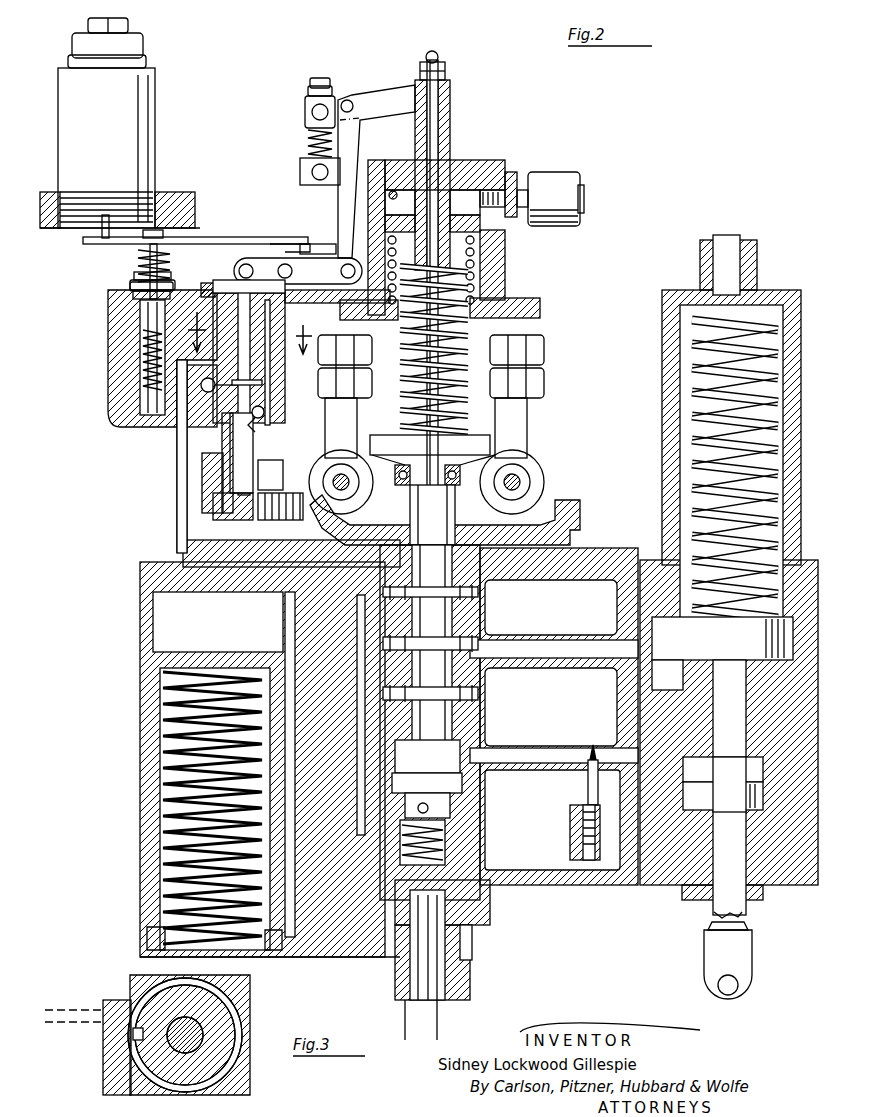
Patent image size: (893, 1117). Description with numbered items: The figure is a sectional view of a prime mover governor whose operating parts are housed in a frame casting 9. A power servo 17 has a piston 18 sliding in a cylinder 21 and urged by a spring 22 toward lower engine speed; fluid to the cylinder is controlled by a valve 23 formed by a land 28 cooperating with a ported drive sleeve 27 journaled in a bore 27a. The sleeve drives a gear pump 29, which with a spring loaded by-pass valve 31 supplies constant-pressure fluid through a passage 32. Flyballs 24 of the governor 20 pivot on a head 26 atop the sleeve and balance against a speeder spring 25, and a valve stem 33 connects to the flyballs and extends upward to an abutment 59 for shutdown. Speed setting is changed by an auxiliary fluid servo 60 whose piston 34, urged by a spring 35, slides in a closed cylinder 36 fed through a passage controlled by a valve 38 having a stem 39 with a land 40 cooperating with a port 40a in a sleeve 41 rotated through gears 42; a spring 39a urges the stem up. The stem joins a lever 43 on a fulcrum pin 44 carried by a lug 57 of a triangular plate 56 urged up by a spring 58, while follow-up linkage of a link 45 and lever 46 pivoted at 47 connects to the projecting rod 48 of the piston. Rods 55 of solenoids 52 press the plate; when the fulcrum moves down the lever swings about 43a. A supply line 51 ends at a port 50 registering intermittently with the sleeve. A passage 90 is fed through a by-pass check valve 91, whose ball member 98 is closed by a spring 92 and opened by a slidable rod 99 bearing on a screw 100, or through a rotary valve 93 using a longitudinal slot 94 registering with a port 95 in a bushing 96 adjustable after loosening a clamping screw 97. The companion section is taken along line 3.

In FIG. 2, the solenoid 52 is at (150, 135).
In FIG. 2, the rod 55 is at (102, 234).
In FIG. 2, the plate 56 is at (90, 245).
In FIG. 2, the spring 58 is at (140, 266).
In FIG. 2, the screw 100 is at (170, 262).
In FIG. 2, the clamping screw 97 is at (208, 290).
In FIG. 2, the fulcrum pin 44 is at (292, 272).
In FIG. 2, the lug 57 is at (258, 266).
In FIG. 2, the pivot 43a is at (344, 281).
In FIG. 2, the lever 43 is at (322, 270).
In FIG. 2, the lever 46 is at (385, 105).
In FIG. 2, the link 45 is at (340, 192).
In FIG. 2, the pivot 47 is at (307, 114).
In FIG. 2, the projecting rod 48 is at (450, 135).
In FIG. 2, the abutment 59 is at (448, 72).
In FIG. 2, the cylinder 36 is at (476, 237).
In FIG. 2, the piston 34 is at (498, 246).
In FIG. 2, the spring 35 is at (478, 286).
In FIG. 2, the auxiliary fluid servo 60 is at (512, 258).
In FIG. 2, the speeder spring 25 is at (482, 338).
In FIG. 2, the flyballs 24 is at (545, 350).
In FIG. 2, the governor 20 is at (550, 452).
In FIG. 2, the head 26 is at (560, 505).
In FIG. 2, the valve stem 33 is at (410, 518).
In FIG. 2, the frame casting 9 is at (598, 566).
In FIG. 2, the passage 32 is at (350, 612).
In FIG. 2, the by-pass valve 31 is at (300, 657).
In FIG. 2, the land 28 is at (430, 645).
In FIG. 2, the valve 23 is at (470, 658).
In FIG. 2, the ported drive sleeve 27 is at (470, 680).
In FIG. 2, the bore 27a is at (470, 730).
In FIG. 2, the gear pump 29 is at (384, 978).
In FIG. 2, the power servo 17 is at (667, 550).
In FIG. 2, the spring 22 is at (762, 440).
In FIG. 2, the piston 18 is at (680, 628).
In FIG. 2, the cylinder 21 is at (668, 668).
In FIG. 2, the by-pass check valve 91 is at (135, 361).
In FIG. 2, the slidable rod 99 is at (140, 306).
In FIG. 2, the ball member 98 is at (140, 332).
In FIG. 2, the spring 92 is at (140, 378).
In FIG. 2, the passage 90 is at (189, 305).
In FIG. 3, the passage 90 is at (118, 1060).
In FIG. 2, the rotary valve 93 is at (200, 328).
In FIG. 2, the section line 3 is at (248, 331).
In FIG. 2, the port 50 is at (215, 378).
In FIG. 3, the port 50 is at (160, 983).
In FIG. 2, the longitudinal slot 94 is at (285, 372).
In FIG. 3, the longitudinal slot 94 is at (185, 1000).
In FIG. 2, the bushing 96 is at (285, 348).
In FIG. 3, the bushing 96 is at (240, 1058).
In FIG. 2, the land 40 is at (262, 383).
In FIG. 2, the port 40a is at (270, 405).
In FIG. 2, the sleeve 41 is at (283, 425).
In FIG. 3, the sleeve 41 is at (232, 1025).
In FIG. 2, the valve 38 is at (297, 439).
In FIG. 2, the spring 39a is at (208, 447).
In FIG. 2, the gears 42 is at (298, 523).
In FIG. 2, the supply line 51 is at (185, 450).
In FIG. 3, the supply line 51 is at (71, 1012).
In FIG. 3, the stem 39 is at (185, 1045).
In FIG. 3, the port 95 is at (138, 1045).